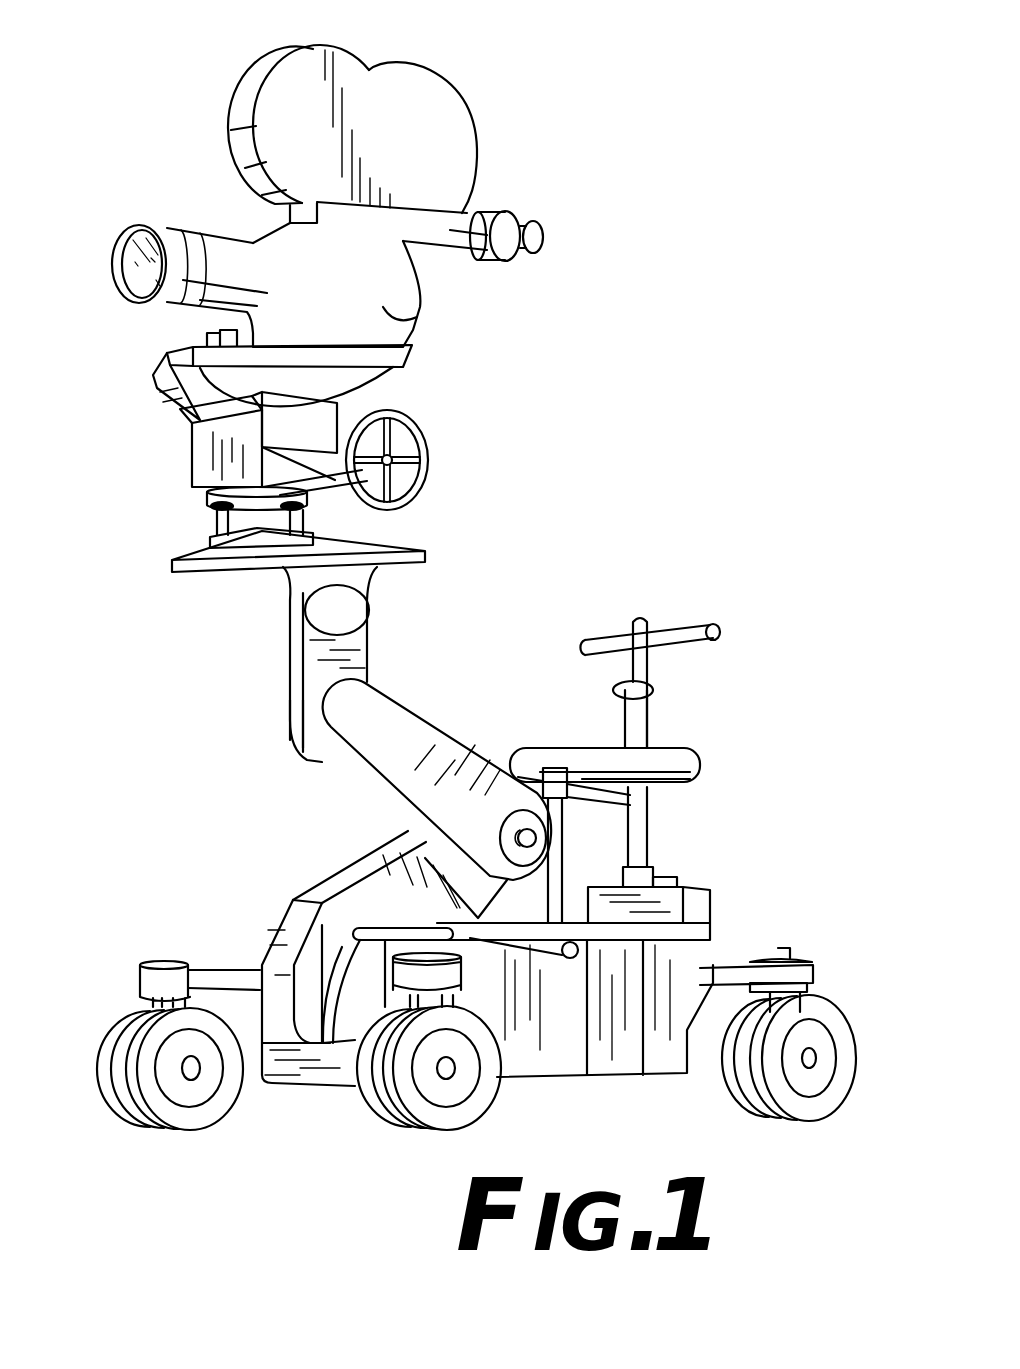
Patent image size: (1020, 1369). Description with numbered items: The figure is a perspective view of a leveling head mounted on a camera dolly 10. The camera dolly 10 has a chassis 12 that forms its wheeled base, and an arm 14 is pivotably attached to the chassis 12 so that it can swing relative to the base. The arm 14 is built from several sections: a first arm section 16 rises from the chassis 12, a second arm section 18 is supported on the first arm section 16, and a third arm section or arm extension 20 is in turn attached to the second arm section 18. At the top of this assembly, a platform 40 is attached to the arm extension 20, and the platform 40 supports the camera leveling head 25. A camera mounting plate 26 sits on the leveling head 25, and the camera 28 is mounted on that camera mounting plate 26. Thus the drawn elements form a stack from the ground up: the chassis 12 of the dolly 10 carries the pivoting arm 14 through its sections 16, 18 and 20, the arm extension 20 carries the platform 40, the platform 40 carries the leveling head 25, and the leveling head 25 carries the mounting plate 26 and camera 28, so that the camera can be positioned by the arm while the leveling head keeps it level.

The camera dolly 10 is at (225, 903).
The chassis 12 is at (305, 1070).
The arm 14 is at (391, 828).
The first arm section 16 is at (347, 878).
The second arm section 18 is at (370, 703).
The arm extension 20 is at (295, 660).
The camera leveling head 25 is at (205, 522).
The camera mounting plate 26 is at (223, 491).
The camera 28 is at (417, 317).
The platform 40 is at (360, 578).